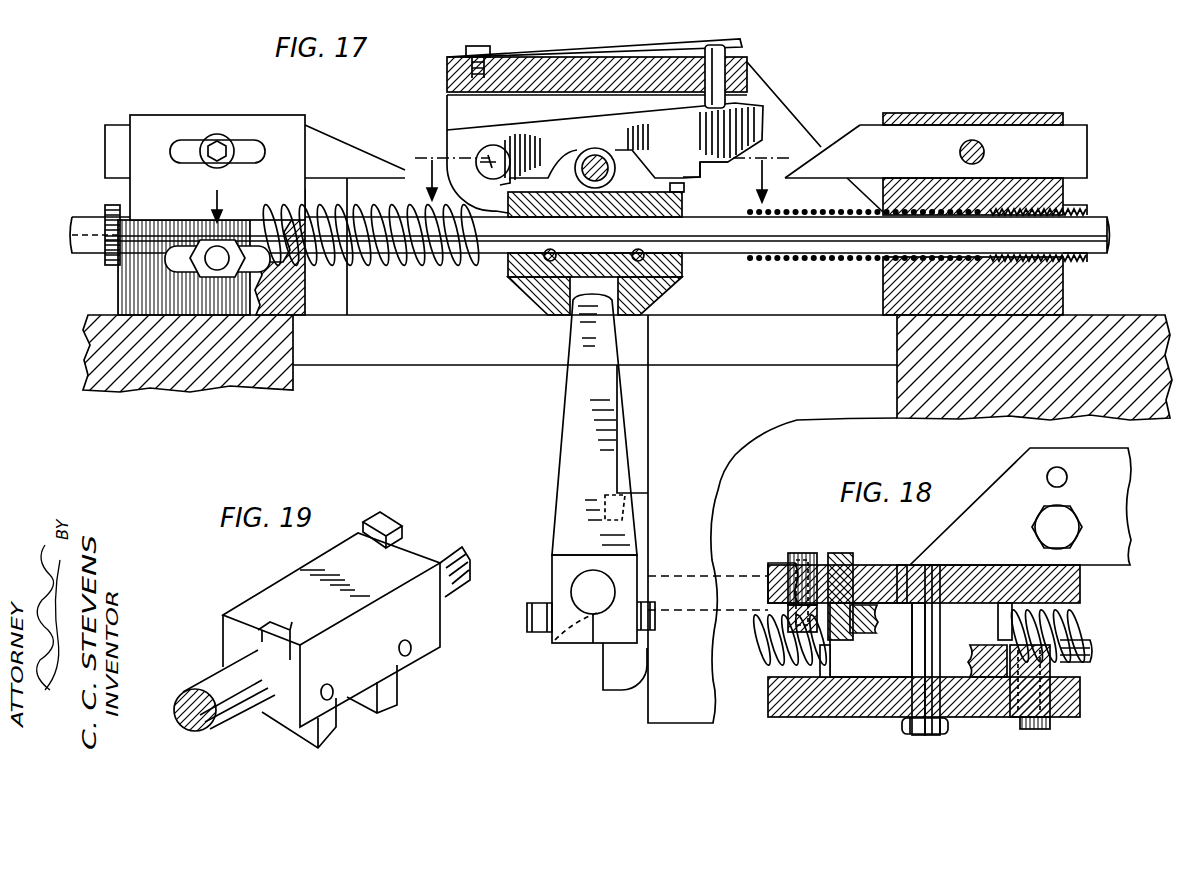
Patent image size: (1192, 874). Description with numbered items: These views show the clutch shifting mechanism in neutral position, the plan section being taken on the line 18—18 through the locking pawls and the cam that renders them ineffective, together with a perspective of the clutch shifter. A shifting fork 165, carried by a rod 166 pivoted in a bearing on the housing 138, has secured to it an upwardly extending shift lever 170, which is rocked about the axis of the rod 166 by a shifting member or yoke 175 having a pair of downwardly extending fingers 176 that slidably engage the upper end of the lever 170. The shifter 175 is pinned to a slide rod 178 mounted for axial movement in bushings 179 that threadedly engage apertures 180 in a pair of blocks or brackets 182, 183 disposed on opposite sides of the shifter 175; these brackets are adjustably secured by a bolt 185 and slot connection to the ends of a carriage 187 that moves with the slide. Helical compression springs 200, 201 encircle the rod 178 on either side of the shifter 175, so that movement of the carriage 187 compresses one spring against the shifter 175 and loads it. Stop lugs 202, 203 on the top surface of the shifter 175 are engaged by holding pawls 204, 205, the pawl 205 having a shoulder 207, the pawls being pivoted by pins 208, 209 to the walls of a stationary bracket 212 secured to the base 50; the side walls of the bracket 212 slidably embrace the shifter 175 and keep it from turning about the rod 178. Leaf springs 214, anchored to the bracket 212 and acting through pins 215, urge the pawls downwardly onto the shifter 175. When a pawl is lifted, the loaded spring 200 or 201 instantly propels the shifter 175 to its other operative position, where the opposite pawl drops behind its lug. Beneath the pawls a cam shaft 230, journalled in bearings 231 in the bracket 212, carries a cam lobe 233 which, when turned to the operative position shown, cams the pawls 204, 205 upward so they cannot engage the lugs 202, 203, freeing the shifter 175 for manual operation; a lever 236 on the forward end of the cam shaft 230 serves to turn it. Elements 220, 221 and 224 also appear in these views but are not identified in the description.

In FIG. 17, the line 18— 18 is at (601, 169).
In FIG. 17, the base 50 is at (92, 345).
In FIG. 17, the housing 138 is at (758, 440).
In FIG. 17, the shifting fork 165 is at (735, 577).
In FIG. 17, the rod 166 is at (565, 580).
In FIG. 17, the shift lever 170 is at (578, 407).
In FIG. 17, the shifting member 175 is at (686, 272).
In FIG. 19, the shifting member 175 is at (272, 580).
In FIG. 18, the shifting member 175 is at (868, 672).
In FIG. 17, the fingers 176 is at (547, 287).
In FIG. 19, the fingers 176 is at (392, 684).
In FIG. 17, the slide rod 178 is at (80, 222).
In FIG. 19, the slide rod 178 is at (255, 706).
In FIG. 18, the slide rod 178 is at (1088, 642).
In FIG. 17, the bushings 179 is at (112, 212).
In FIG. 17, the apertures 180 is at (925, 195).
In FIG. 17, the block or bracket 182 is at (182, 126).
In FIG. 17, the block or bracket 183 is at (1023, 188).
In FIG. 17, the bolt 185 is at (205, 272).
In FIG. 17, the carriage 187 is at (112, 283).
In FIG. 17, the helical compression spring 200 is at (432, 262).
In FIG. 18, the helical compression spring 200 is at (760, 655).
In FIG. 17, the helical compression spring 201 is at (865, 262).
In FIG. 18, the helical compression spring 201 is at (1083, 620).
In FIG. 19, the stop lug 202 is at (258, 638).
In FIG. 18, the stop lug 202 is at (826, 690).
In FIG. 17, the stop lug 203 is at (686, 188).
In FIG. 19, the stop lug 203 is at (406, 504).
In FIG. 18, the stop lug 203 is at (1004, 622).
In FIG. 18, the holding pawl 204 is at (985, 692).
In FIG. 17, the holding pawl 205 is at (766, 112).
In FIG. 18, the holding pawl 205 is at (862, 572).
In FIG. 17, the shoulder 207 is at (717, 174).
In FIG. 18, the pin 208 is at (1020, 722).
In FIG. 17, the pin 209 is at (490, 155).
In FIG. 18, the pin 209 is at (810, 570).
In FIG. 17, the stationary bracket 212 is at (742, 72).
In FIG. 18, the stationary bracket 212 is at (1014, 557).
In FIG. 17, the leaf springs 214 is at (608, 48).
In FIG. 17, the pins 215 is at (708, 52).
In FIG. 17, the wedge 220 is at (318, 128).
In FIG. 17, the wedge 221 is at (866, 137).
In FIG. 17, the direction arrow 224 is at (217, 205).
In FIG. 17, the cam shaft 230 is at (575, 155).
In FIG. 18, the cam shaft 230 is at (934, 568).
In FIG. 18, the bearings 231 is at (903, 583).
In FIG. 17, the cam lobe 233 is at (605, 148).
In FIG. 18, the cam lobe 233 is at (912, 644).
In FIG. 18, the lever 236 is at (910, 732).